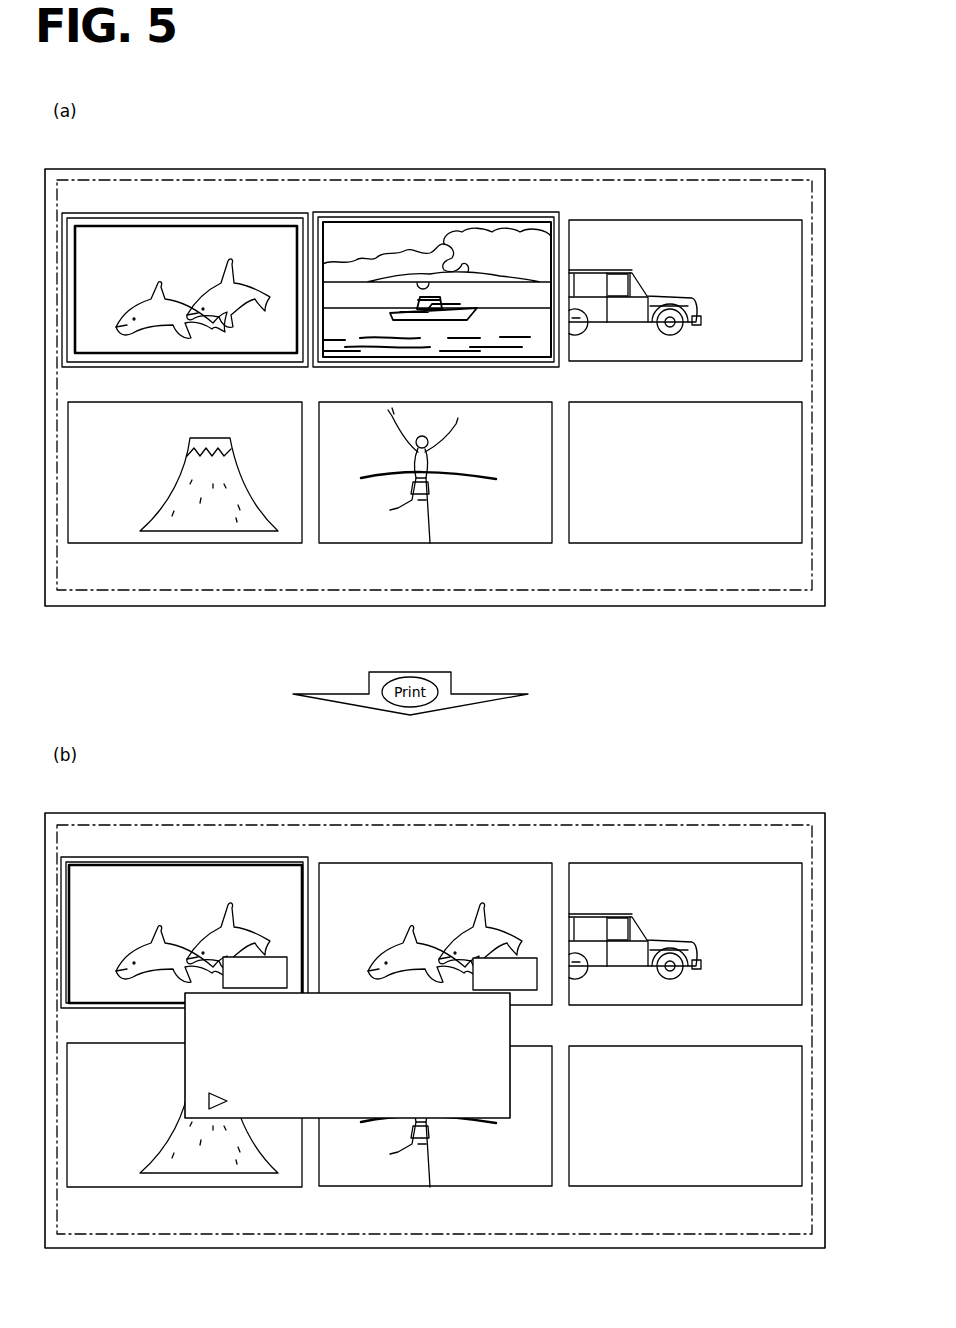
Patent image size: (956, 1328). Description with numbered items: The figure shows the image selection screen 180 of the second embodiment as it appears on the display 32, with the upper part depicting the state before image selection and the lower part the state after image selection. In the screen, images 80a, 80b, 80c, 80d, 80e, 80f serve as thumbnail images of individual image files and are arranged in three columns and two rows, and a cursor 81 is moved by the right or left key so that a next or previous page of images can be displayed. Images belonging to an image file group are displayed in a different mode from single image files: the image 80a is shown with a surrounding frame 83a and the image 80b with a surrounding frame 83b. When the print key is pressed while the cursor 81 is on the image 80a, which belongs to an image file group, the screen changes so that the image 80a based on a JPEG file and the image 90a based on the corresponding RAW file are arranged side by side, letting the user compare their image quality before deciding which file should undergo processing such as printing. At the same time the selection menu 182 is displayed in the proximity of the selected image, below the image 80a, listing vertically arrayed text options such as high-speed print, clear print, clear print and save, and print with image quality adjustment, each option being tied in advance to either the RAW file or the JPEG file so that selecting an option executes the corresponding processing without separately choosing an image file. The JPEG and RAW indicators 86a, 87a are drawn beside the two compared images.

The display 32 is at (818, 169).
The image selection screen 180 is at (728, 180).
The image 80a is at (177, 213).
The image 80b is at (428, 212).
The image 80c is at (672, 220).
The image 80d is at (200, 543).
The image 80e is at (427, 543).
The image 80f is at (650, 543).
The cursor 81 is at (229, 226).
The surrounding frame 83a is at (276, 213).
The surrounding frame 83b is at (481, 212).
The JPEG format indicator 86a is at (270, 957).
The RAW format indicator 87a is at (503, 958).
The image 90a is at (428, 863).
The selection menu 182 is at (340, 993).